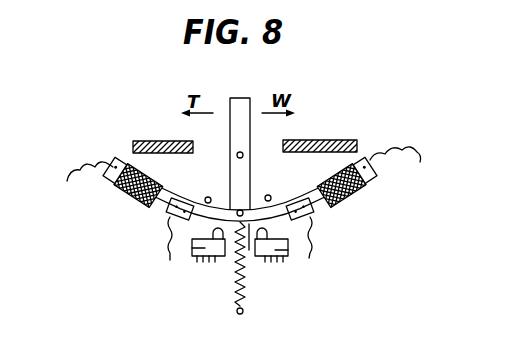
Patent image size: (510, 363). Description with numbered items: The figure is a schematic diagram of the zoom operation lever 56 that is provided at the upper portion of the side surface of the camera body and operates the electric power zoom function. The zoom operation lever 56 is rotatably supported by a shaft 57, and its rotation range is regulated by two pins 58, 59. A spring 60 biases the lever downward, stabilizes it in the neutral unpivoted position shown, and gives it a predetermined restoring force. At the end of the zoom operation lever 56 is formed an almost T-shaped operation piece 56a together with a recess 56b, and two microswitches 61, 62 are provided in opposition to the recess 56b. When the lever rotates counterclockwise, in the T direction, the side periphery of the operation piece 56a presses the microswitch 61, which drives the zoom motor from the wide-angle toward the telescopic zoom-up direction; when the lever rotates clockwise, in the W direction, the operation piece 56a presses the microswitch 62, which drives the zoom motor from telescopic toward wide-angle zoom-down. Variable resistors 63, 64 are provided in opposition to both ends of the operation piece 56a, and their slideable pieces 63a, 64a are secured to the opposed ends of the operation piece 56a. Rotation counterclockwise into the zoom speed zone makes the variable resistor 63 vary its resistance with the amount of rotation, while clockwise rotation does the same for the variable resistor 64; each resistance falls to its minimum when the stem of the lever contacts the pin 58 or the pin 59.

The zoom operation lever 56 is at (243, 106).
The operation piece 56a is at (193, 207).
The recess 56b is at (249, 250).
The shaft 57 is at (239, 151).
The pin 58 is at (277, 188).
The pin 59 is at (210, 197).
The spring 60 is at (237, 263).
The microswitch 61 is at (192, 248).
The microswitch 62 is at (288, 250).
The variable resistor 63 is at (366, 190).
The slideable piece 63a is at (313, 214).
The variable resistor 64 is at (125, 190).
The slideable piece 64a is at (167, 220).